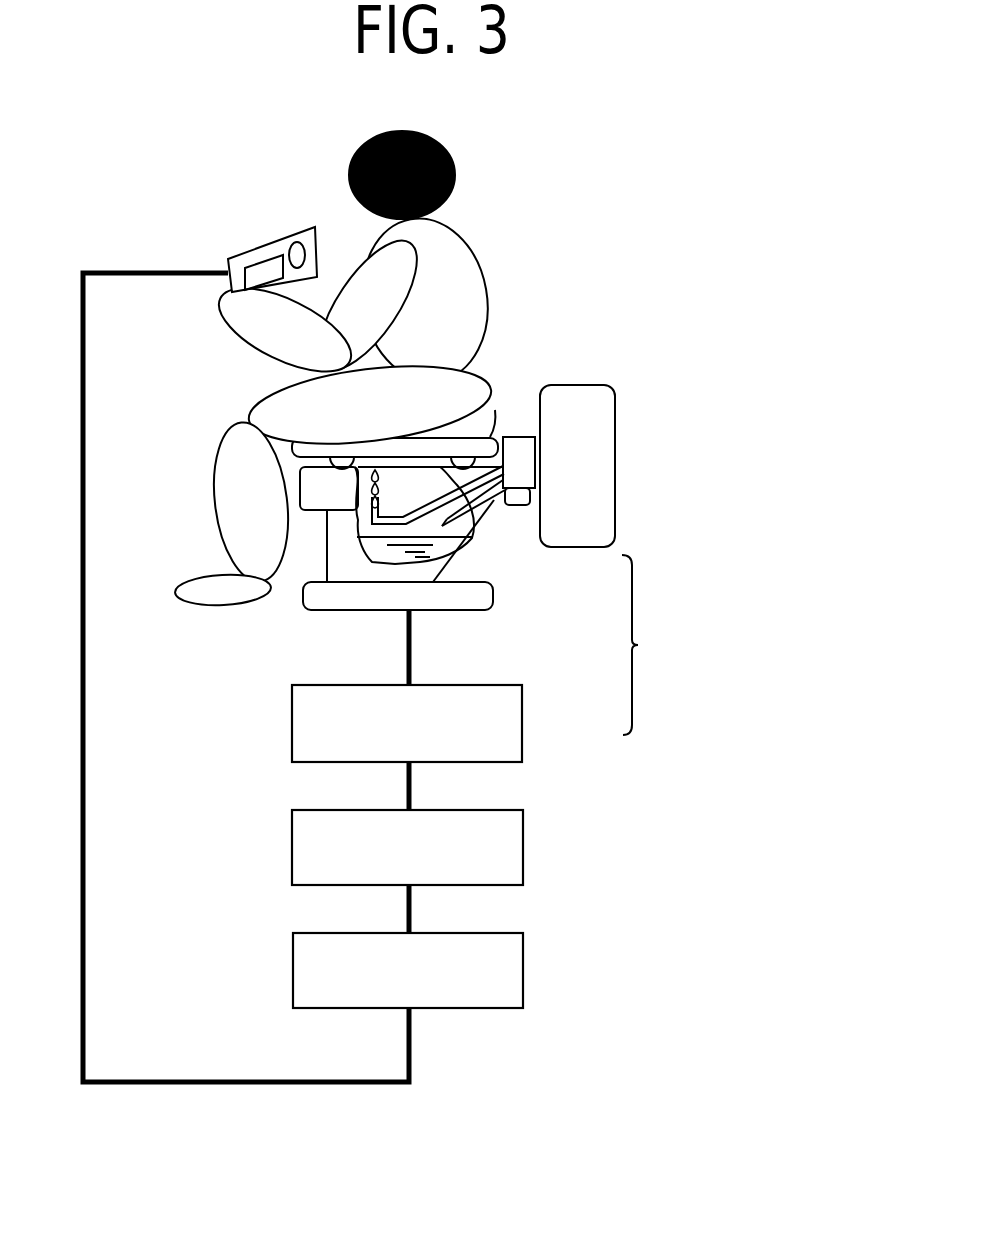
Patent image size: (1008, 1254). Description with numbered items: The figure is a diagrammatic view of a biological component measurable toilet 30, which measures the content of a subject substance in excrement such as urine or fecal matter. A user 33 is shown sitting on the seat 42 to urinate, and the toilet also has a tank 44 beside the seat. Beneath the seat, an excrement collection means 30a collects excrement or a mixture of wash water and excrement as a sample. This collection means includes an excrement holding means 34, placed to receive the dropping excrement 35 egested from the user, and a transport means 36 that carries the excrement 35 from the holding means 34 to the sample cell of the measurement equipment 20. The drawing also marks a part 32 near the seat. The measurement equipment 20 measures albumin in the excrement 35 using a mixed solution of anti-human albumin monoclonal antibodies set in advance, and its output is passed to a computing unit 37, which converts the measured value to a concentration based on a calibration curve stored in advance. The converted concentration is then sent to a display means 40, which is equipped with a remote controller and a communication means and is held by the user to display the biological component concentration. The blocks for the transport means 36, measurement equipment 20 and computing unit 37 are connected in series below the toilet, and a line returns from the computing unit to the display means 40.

The measurement equipment 20 is at (524, 845).
The biological component measurable toilet 30 is at (746, 216).
The excrement collection means 30a is at (672, 645).
The collection part 32 is at (528, 463).
The user 33 is at (481, 186).
The excrement holding means 34 is at (490, 500).
The excrement 35 is at (376, 500).
The transport means 36 is at (523, 720).
The computing unit 37 is at (524, 968).
The display means 40 is at (260, 243).
The seat 42 is at (500, 438).
The tank 44 is at (597, 393).